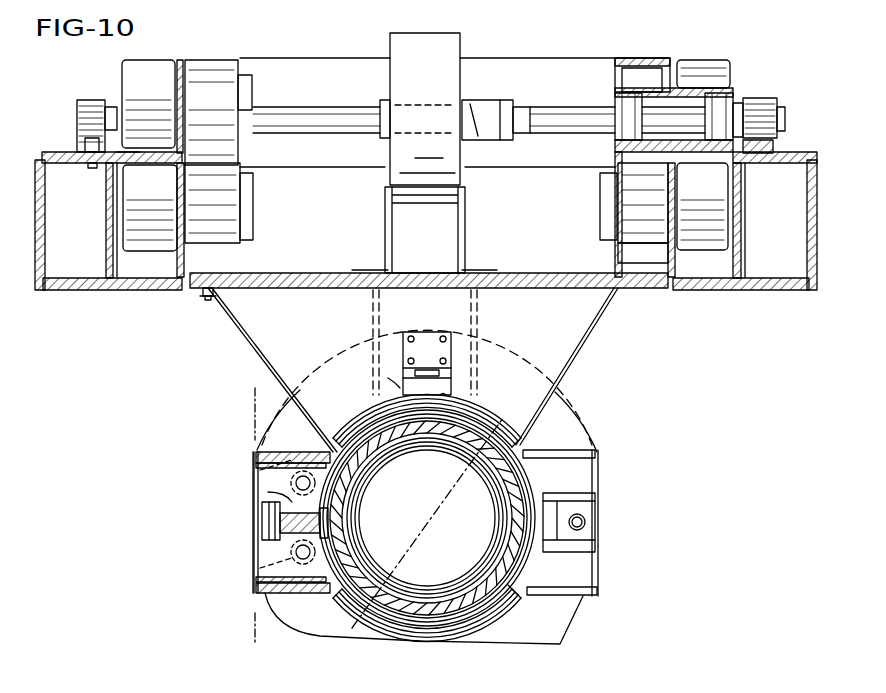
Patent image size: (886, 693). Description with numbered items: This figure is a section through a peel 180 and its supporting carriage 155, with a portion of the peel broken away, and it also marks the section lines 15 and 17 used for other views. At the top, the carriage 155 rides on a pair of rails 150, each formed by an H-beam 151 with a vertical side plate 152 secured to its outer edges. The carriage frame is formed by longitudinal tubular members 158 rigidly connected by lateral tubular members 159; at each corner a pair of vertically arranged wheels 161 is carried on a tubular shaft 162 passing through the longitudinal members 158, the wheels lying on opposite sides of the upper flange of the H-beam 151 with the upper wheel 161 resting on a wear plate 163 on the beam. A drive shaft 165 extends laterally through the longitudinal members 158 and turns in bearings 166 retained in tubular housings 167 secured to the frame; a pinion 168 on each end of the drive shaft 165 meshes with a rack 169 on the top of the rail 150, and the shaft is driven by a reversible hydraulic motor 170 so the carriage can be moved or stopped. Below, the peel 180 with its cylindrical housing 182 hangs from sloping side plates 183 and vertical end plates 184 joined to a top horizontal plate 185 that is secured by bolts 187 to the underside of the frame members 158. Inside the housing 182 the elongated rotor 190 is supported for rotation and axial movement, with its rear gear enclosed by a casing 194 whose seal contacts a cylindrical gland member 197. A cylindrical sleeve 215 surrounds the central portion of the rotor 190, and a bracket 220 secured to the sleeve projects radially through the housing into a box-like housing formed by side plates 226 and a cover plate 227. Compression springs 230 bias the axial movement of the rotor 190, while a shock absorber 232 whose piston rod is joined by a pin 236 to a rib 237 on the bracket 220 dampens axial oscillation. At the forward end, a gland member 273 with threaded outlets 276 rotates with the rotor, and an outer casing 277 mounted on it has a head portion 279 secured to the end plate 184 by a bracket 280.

The section line 15- 15 is at (282, 400).
The section line 17- 17 is at (527, 430).
The rail 150 is at (424, 255).
The H-beam 151 is at (82, 290).
The vertical side plate 152 is at (37, 282).
The carriage 155 is at (650, 52).
The longitudinal tubular member 158 is at (620, 252).
The lateral tubular member 159 is at (518, 70).
The wheel 161 is at (160, 80).
The tubular shaft 162 is at (215, 90).
The wear plate 163 is at (140, 158).
The drive shaft 165 is at (572, 112).
The bearing 166 is at (630, 100).
The tubular housing 167 is at (683, 90).
The pinion 168 is at (88, 105).
The rack 169 is at (80, 146).
The hydraulic motor 170 is at (408, 40).
The peel 180 is at (582, 416).
The cylindrical housing 182 is at (512, 582).
The sloping side plate 183 is at (605, 327).
The vertical end plate 184 is at (585, 352).
The top horizontal plate 185 is at (605, 284).
The bolt 187 is at (210, 298).
The rotor 190 is at (427, 518).
The casing 194 is at (563, 627).
The cylindrical gland member 197 is at (490, 468).
The cylindrical sleeve 215 is at (338, 495).
The bracket 220 is at (261, 513).
The side plate 226 is at (596, 450).
The cover plate 227 is at (598, 478).
The compression spring 230 is at (254, 569).
The shock absorber 232 is at (585, 522).
The pin 236 is at (262, 525).
The rib 237 is at (265, 493).
The gland member 273 is at (447, 417).
The threaded outlet 276 is at (378, 602).
The outer casing 277 is at (358, 426).
The head portion 279 is at (405, 382).
The bracket 280 is at (450, 345).